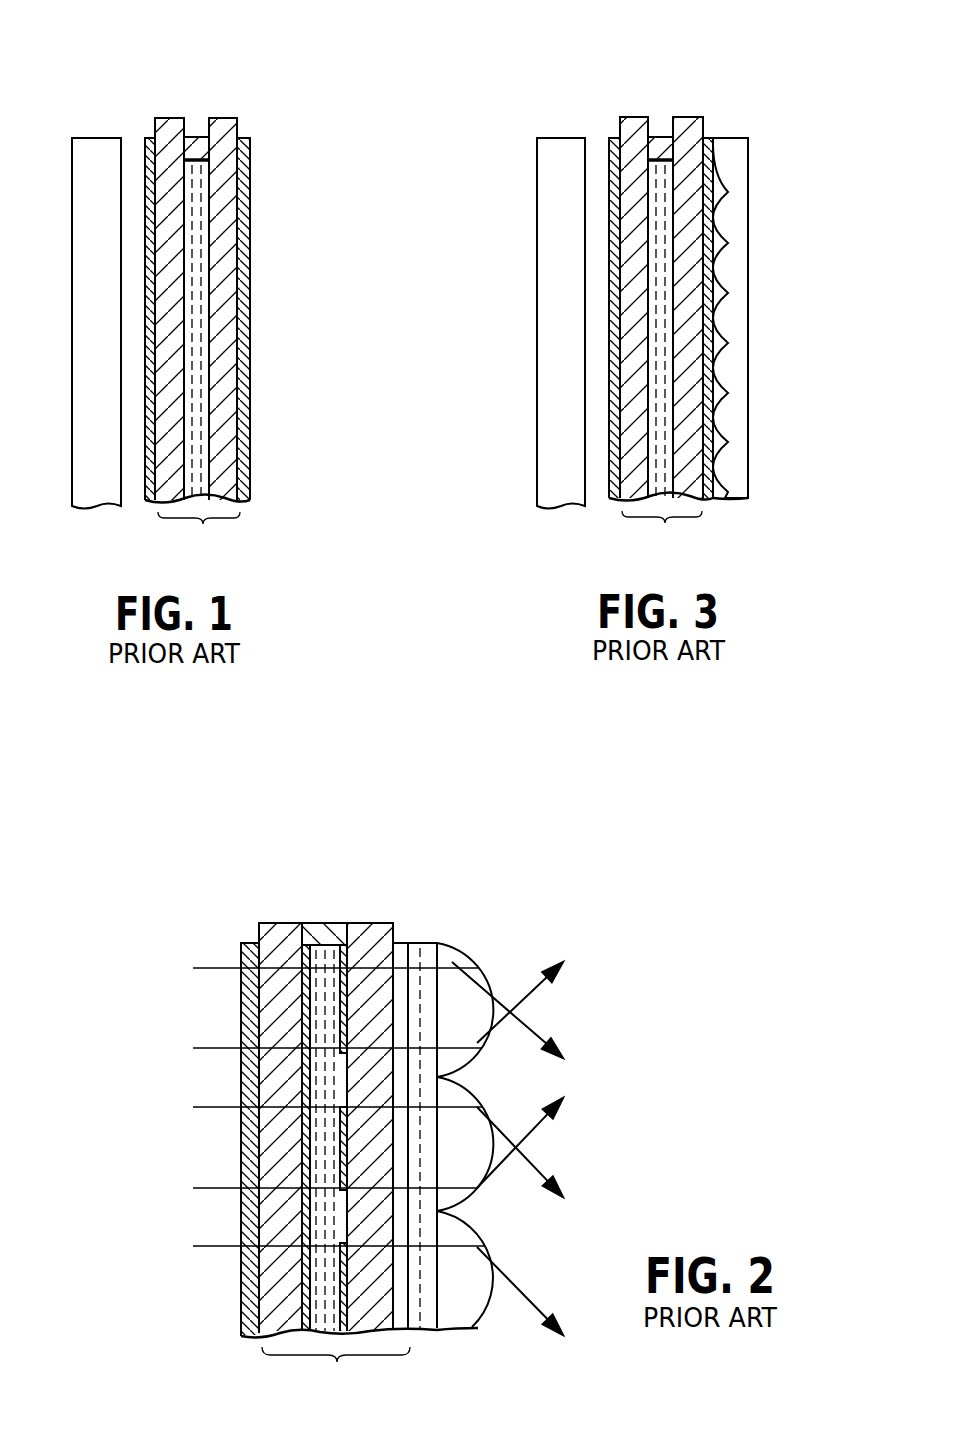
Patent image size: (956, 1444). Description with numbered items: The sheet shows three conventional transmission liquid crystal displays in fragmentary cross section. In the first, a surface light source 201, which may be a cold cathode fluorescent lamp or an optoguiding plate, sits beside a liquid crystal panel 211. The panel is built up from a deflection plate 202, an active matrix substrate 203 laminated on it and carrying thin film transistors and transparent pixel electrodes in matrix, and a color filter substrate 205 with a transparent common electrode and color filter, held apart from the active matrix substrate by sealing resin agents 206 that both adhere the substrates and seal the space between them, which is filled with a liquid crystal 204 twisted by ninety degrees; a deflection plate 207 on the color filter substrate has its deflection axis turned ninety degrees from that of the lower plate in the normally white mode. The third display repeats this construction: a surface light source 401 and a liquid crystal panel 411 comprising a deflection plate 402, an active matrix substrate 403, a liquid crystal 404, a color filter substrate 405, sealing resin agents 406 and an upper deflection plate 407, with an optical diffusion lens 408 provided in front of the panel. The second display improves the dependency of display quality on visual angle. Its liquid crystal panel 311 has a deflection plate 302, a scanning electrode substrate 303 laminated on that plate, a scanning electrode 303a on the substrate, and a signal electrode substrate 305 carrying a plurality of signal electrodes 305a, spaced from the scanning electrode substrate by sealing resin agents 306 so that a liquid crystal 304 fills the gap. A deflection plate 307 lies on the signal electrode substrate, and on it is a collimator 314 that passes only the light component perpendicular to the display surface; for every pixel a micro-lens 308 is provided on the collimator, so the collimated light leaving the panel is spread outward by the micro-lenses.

In FIG. 1, the surface light source 201 is at (90, 163).
In FIG. 1, the deflection plate 202 is at (147, 140).
In FIG. 1, the active matrix substrate 203 is at (173, 148).
In FIG. 1, the liquid crystal 204 is at (202, 157).
In FIG. 1, the color filter substrate 205 is at (218, 127).
In FIG. 1, the sealing resin agents 206 is at (192, 138).
In FIG. 1, the deflection plate 207 is at (252, 207).
In FIG. 1, the liquid crystal panel 211 is at (199, 532).
In FIG. 3, the surface light source 401 is at (557, 163).
In FIG. 3, the deflection plate 402 is at (612, 140).
In FIG. 3, the active matrix substrate 403 is at (637, 150).
In FIG. 3, the liquid crystal 404 is at (665, 157).
In FIG. 3, the color filter substrate 405 is at (682, 125).
In FIG. 3, the sealing resin agents 406 is at (653, 138).
In FIG. 3, the deflection plate 407 is at (705, 499).
In FIG. 3, the lenticular lens sheet 408 is at (723, 165).
In FIG. 3, the liquid crystal panel 411 is at (662, 532).
In FIG. 2, the deflection plate 302 is at (250, 953).
In FIG. 2, the scanning electrode substrate 303 is at (272, 927).
In FIG. 2, the scanning electrode 303a is at (300, 962).
In FIG. 2, the liquid crystal 304 is at (342, 968).
In FIG. 2, the signal electrode substrate 305 is at (387, 950).
In FIG. 2, the segmented electrode 305a is at (338, 963).
In FIG. 2, the sealing resin agents 306 is at (317, 937).
In FIG. 2, the deflection plate 307 is at (400, 950).
In FIG. 2, the micro-lenses 308 is at (450, 960).
In FIG. 2, the liquid crystal panel 311 is at (336, 1371).
In FIG. 2, the collimator 314 is at (430, 953).